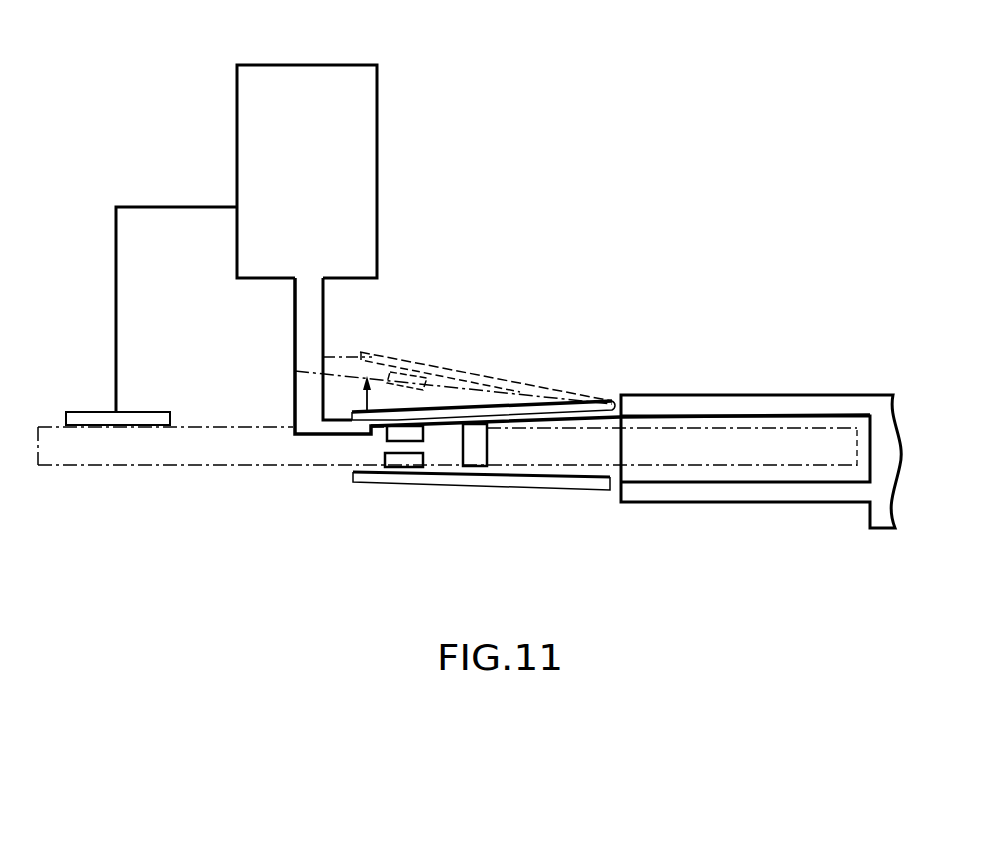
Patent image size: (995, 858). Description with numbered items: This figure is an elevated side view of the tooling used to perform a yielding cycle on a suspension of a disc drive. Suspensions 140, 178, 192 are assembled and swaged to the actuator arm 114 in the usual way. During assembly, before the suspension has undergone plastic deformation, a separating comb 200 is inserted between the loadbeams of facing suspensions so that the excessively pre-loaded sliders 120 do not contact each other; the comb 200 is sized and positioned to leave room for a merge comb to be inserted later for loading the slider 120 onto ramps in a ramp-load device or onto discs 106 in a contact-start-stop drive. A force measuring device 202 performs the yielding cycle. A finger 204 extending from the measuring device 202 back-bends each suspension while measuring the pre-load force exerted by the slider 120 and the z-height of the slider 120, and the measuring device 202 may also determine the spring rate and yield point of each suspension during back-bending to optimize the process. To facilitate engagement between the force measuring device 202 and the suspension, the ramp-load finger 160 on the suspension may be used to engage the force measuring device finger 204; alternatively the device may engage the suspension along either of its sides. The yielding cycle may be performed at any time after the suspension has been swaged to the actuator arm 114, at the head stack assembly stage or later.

The disc 106 is at (60, 450).
The actuator arm 114 is at (688, 405).
The slider 120 is at (410, 462).
The suspension 140 is at (620, 380).
The suspension 178 is at (620, 380).
The suspension 192 is at (510, 412).
The ramp-load finger 160 is at (400, 412).
The separating comb 200 is at (477, 455).
The force measuring device 202 is at (362, 151).
The finger 204 is at (338, 434).